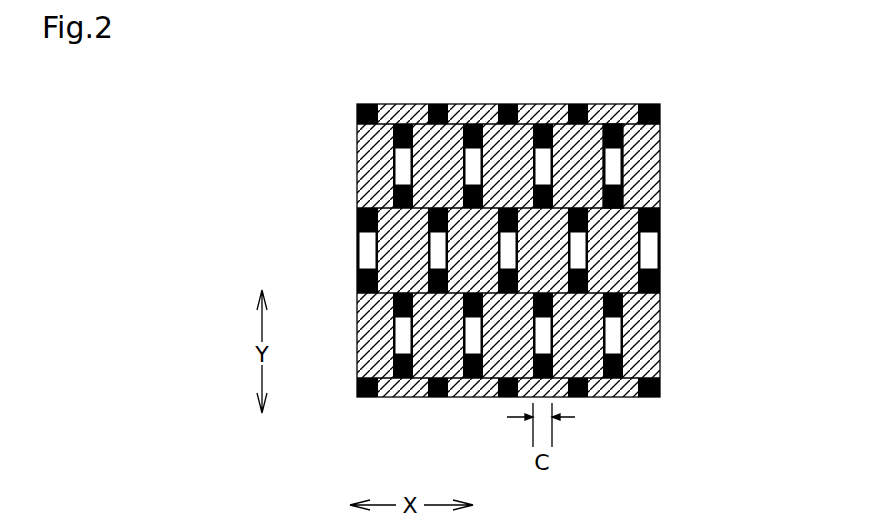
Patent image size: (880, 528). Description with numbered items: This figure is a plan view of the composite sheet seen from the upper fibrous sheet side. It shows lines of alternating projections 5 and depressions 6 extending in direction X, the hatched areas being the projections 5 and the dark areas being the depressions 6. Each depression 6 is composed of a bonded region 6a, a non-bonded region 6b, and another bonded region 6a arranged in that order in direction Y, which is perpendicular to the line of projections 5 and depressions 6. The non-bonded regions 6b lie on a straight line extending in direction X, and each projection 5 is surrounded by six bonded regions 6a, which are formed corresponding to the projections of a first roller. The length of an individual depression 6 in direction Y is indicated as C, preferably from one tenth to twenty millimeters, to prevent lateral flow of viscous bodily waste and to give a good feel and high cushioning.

The projection 5 is at (443, 347).
The depression 6 is at (750, 85).
The bonded region 6a is at (626, 134).
The non-bonded region 6b is at (612, 163).